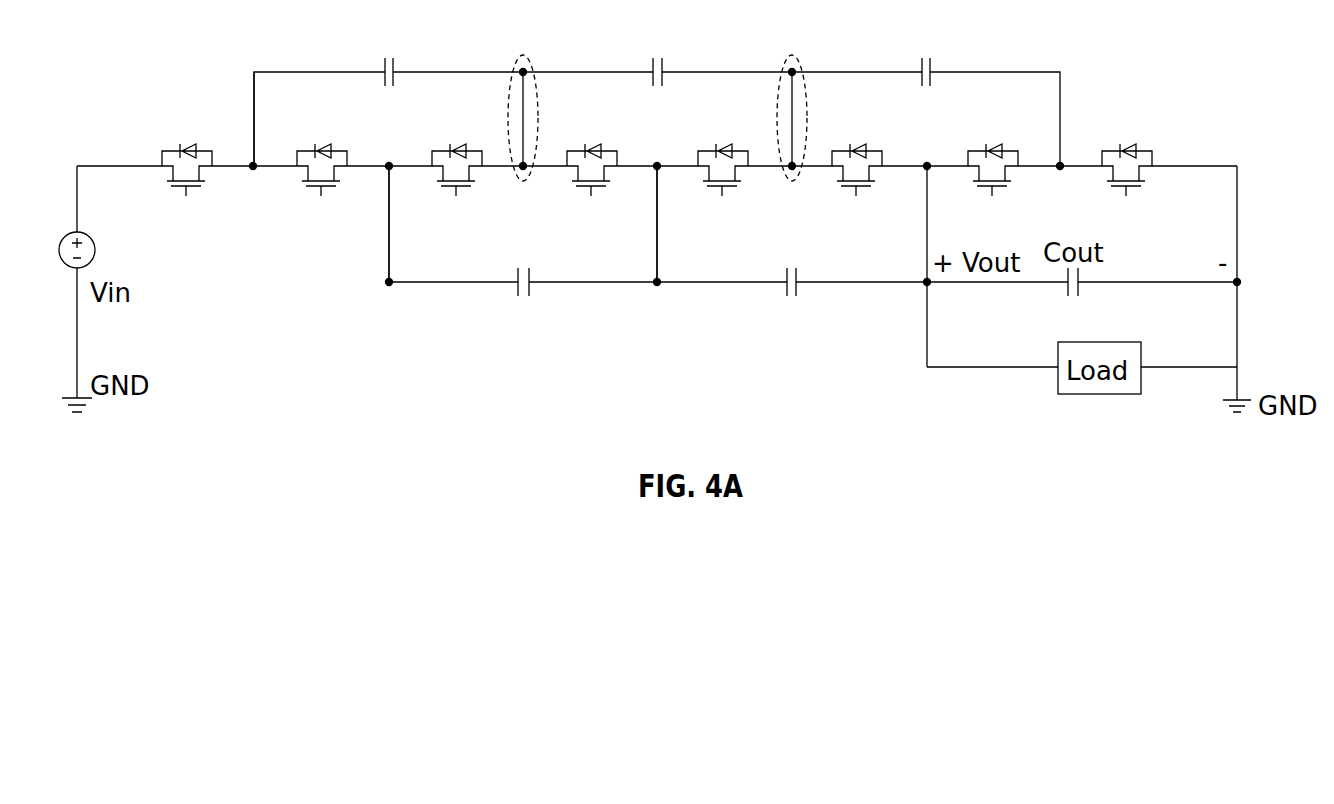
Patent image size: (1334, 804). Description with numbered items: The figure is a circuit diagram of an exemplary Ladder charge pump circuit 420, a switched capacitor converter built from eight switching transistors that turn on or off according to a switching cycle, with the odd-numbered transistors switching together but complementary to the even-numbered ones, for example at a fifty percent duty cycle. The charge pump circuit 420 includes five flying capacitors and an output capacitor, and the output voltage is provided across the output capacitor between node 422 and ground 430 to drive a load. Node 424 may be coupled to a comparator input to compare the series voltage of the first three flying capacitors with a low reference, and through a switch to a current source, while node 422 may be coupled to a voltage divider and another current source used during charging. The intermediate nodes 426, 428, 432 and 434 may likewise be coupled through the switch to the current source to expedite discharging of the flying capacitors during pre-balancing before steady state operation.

The Ladder charge pump circuit 420 is at (657, 197).
The node 422 is at (930, 286).
The node 424 is at (254, 169).
The node 426 is at (389, 163).
The node 428 is at (525, 170).
The ground 430 is at (1240, 414).
The node 432 is at (657, 163).
The node 434 is at (795, 170).